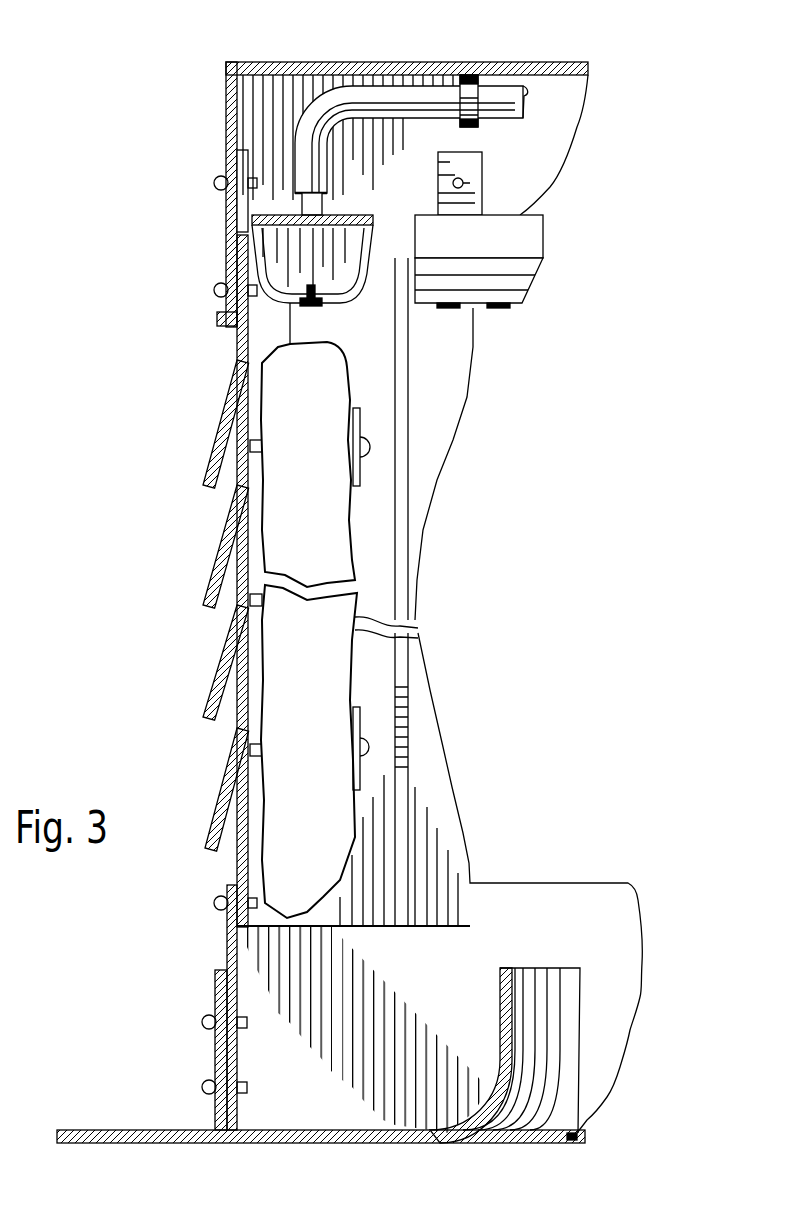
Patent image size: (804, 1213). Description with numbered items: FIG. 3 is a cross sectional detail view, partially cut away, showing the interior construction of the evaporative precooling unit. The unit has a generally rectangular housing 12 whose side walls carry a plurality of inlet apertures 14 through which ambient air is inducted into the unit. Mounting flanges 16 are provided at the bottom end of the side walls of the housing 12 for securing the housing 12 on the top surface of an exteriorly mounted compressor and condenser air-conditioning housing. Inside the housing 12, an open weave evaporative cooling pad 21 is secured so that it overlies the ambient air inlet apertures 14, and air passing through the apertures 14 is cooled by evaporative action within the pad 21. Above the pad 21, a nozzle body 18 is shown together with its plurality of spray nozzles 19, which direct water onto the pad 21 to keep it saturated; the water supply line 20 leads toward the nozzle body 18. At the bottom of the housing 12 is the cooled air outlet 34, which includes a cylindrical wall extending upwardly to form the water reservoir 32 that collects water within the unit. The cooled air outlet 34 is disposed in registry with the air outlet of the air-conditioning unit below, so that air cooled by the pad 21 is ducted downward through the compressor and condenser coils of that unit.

The housing 12 is at (325, 63).
The inlet apertures 14 is at (218, 680).
The mounting flanges 16 is at (165, 1130).
The nozzle body 18 is at (230, 224).
The spray nozzles 19 is at (312, 312).
The air duct pipe 20 is at (430, 100).
The open weave evaporative cooling pad 21 is at (297, 478).
The water reservoir 32 is at (327, 1130).
The cooled air outlet 34 is at (512, 968).